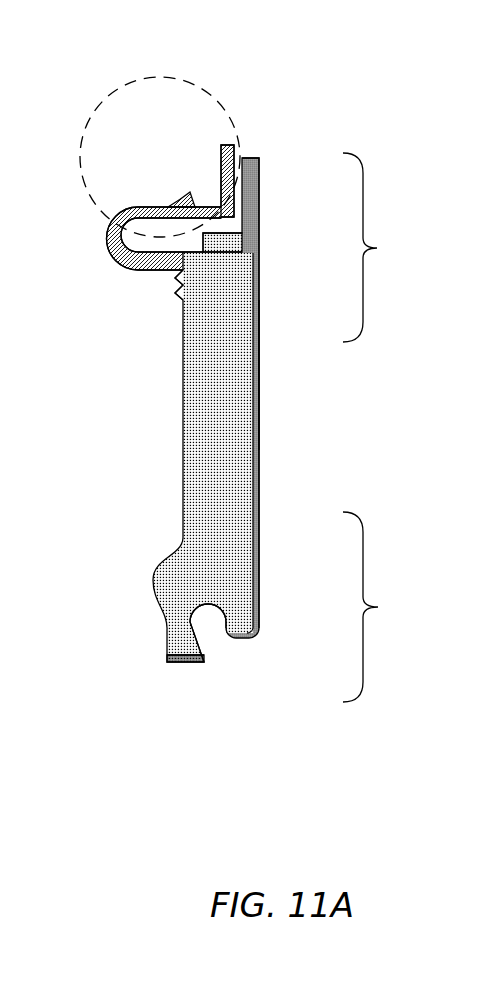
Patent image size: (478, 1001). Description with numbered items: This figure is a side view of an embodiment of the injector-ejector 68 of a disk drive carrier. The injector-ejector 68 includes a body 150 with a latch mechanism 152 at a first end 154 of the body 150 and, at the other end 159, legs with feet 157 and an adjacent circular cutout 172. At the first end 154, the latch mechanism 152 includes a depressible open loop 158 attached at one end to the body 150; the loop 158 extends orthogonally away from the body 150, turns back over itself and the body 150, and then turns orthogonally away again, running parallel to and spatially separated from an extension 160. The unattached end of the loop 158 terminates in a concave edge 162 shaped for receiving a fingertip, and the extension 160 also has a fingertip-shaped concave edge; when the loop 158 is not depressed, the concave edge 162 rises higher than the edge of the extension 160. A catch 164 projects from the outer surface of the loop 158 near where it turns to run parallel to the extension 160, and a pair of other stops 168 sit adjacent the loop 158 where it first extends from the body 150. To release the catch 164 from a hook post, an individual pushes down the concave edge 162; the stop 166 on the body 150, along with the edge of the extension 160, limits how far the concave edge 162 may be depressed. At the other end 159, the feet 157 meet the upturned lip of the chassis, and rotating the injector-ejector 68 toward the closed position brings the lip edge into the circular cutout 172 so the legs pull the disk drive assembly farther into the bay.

The injector-ejector 68 is at (264, 375).
The body 150 is at (183, 403).
The latch mechanism 152 is at (173, 74).
The first end 154 is at (393, 247).
The feet 157 is at (183, 668).
The depressible open loop 158 is at (133, 204).
The other end 159 is at (389, 607).
The extension 160 is at (259, 172).
The concave edge 162 is at (223, 146).
The catch 164 is at (186, 191).
The stop 166 is at (243, 241).
The stops 168 is at (175, 292).
The circular cutout 172 is at (214, 632).